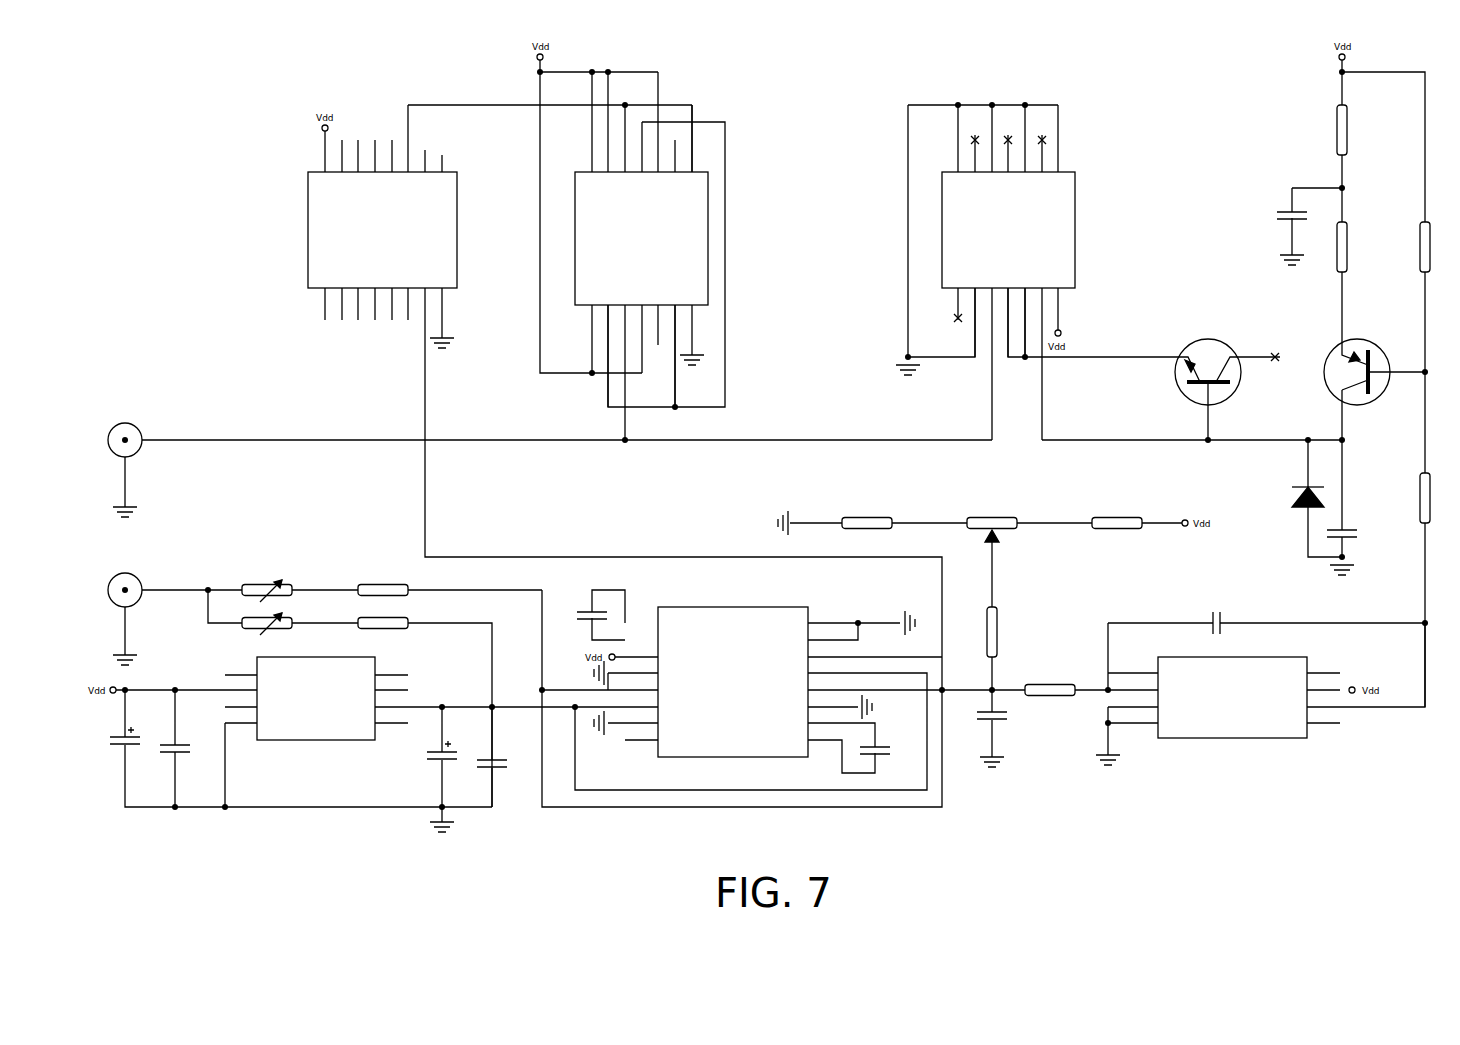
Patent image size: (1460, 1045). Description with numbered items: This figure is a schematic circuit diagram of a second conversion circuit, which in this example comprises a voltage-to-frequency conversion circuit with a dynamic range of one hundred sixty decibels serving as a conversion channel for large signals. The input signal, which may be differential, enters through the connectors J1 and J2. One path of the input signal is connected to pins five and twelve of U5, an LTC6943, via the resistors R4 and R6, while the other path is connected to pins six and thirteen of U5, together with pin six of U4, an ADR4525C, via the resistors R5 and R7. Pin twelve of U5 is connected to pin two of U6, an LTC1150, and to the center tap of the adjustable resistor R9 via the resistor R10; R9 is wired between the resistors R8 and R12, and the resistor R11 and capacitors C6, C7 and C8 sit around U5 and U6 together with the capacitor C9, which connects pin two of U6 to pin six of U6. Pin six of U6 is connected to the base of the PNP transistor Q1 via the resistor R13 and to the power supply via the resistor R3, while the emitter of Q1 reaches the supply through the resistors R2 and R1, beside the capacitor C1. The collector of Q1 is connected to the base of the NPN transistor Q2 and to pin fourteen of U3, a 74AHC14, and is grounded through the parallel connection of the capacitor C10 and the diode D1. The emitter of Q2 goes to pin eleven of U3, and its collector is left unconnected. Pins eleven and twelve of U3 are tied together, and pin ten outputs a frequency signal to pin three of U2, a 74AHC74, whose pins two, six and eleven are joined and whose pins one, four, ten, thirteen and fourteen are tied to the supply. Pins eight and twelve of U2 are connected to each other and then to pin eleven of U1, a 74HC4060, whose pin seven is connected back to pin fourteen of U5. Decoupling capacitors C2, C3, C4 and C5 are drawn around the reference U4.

The 74HC4060 U1 is at (405, 221).
The 74AHC74 U2 is at (662, 256).
The 74AHC14 U3 is at (1029, 272).
The ADR4525C U4 is at (314, 701).
The LTC6943 U5 is at (736, 683).
The LTC1150 U6 is at (1231, 700).
The output connector J1 is at (130, 428).
The input connector J2 is at (126, 578).
The resistor R1 is at (1349, 130).
The resistor R2 is at (1349, 247).
The resistor R3 is at (1432, 247).
The resistor R4 is at (267, 586).
The resistor R5 is at (267, 619).
The resistor R6 is at (383, 583).
The resistor R7 is at (383, 616).
The resistor R8 is at (867, 516).
The adjustable resistor R9 is at (989, 523).
The resistor R10 is at (1002, 632).
The resistor R11 is at (1050, 680).
The resistor R12 is at (1117, 516).
The resistor R13 is at (1435, 498).
The capacitor C1 is at (1282, 207).
The capacitor C2 is at (130, 735).
The capacitor C3 is at (177, 753).
The capacitor C4 is at (448, 750).
The capacitor C5 is at (498, 766).
The capacitor C6 is at (1000, 716).
The capacitor C7 is at (881, 750).
The capacitor C8 is at (582, 607).
The capacitor C9 is at (1214, 616).
The capacitor C10 is at (1350, 535).
The PNP transistor Q1 is at (1374, 378).
The NPN transistor Q2 is at (1219, 389).
The diode D1 is at (1282, 512).